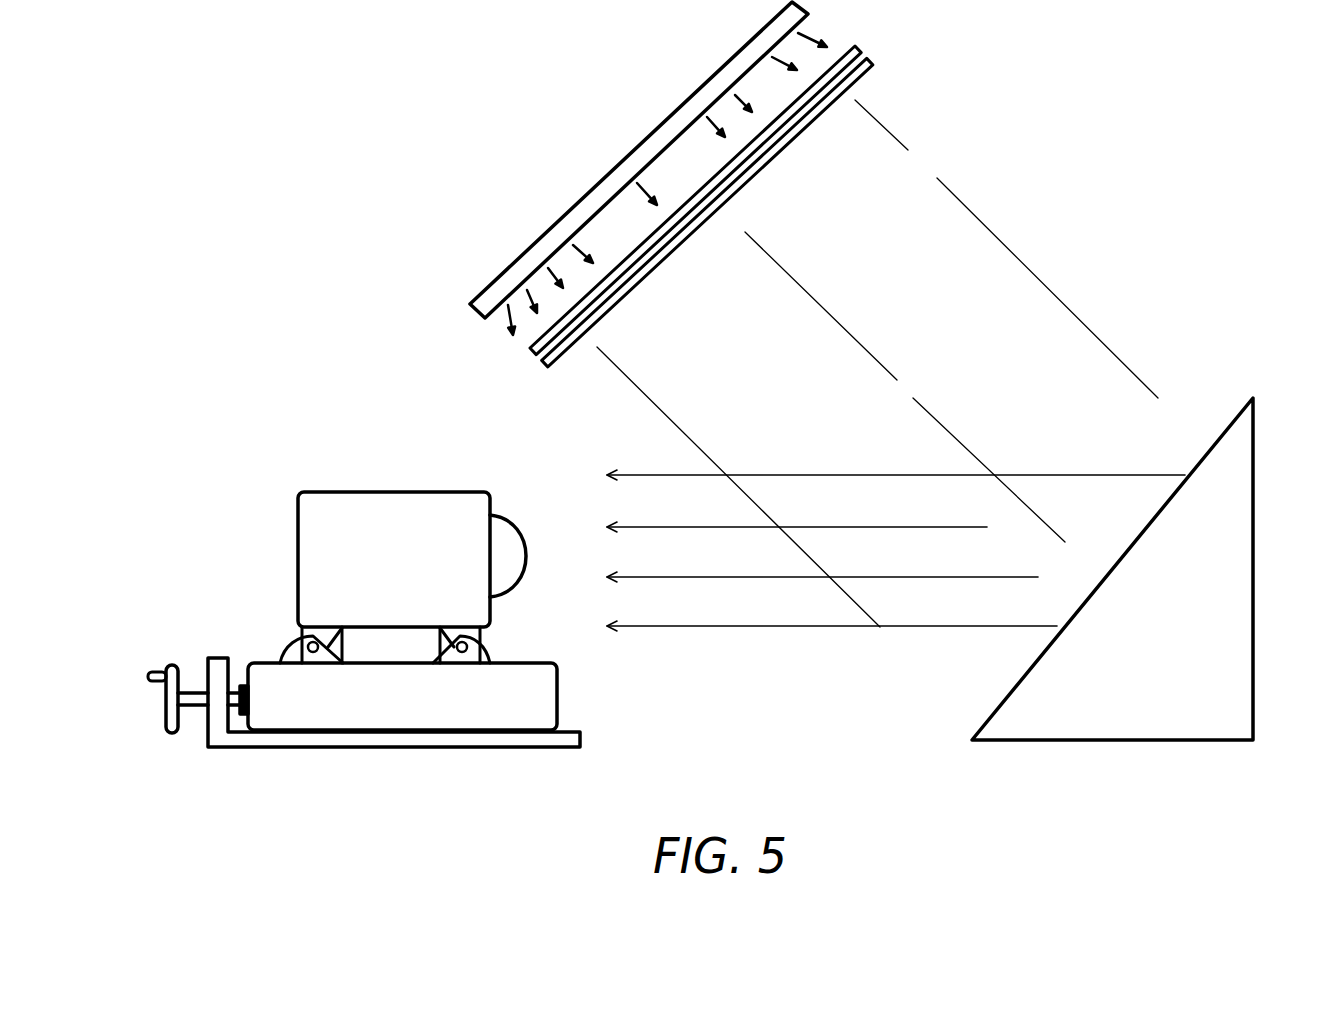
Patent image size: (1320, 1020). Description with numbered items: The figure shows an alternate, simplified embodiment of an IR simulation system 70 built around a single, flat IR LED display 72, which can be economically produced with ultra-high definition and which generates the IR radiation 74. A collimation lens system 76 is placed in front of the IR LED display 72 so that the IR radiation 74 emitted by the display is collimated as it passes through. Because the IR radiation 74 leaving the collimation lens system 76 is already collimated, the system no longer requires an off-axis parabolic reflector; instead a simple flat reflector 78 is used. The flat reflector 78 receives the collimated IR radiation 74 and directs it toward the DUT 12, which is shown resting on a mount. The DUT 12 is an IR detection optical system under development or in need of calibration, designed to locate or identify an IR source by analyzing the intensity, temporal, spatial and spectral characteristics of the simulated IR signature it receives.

The DUT 12 is at (368, 490).
The IR simulation system 70 is at (312, 217).
The flat IR LED display 72 is at (605, 173).
The IR radiation 74 is at (1063, 305).
The collimation lens system 76 is at (887, 62).
The flat reflector 78 is at (1213, 422).